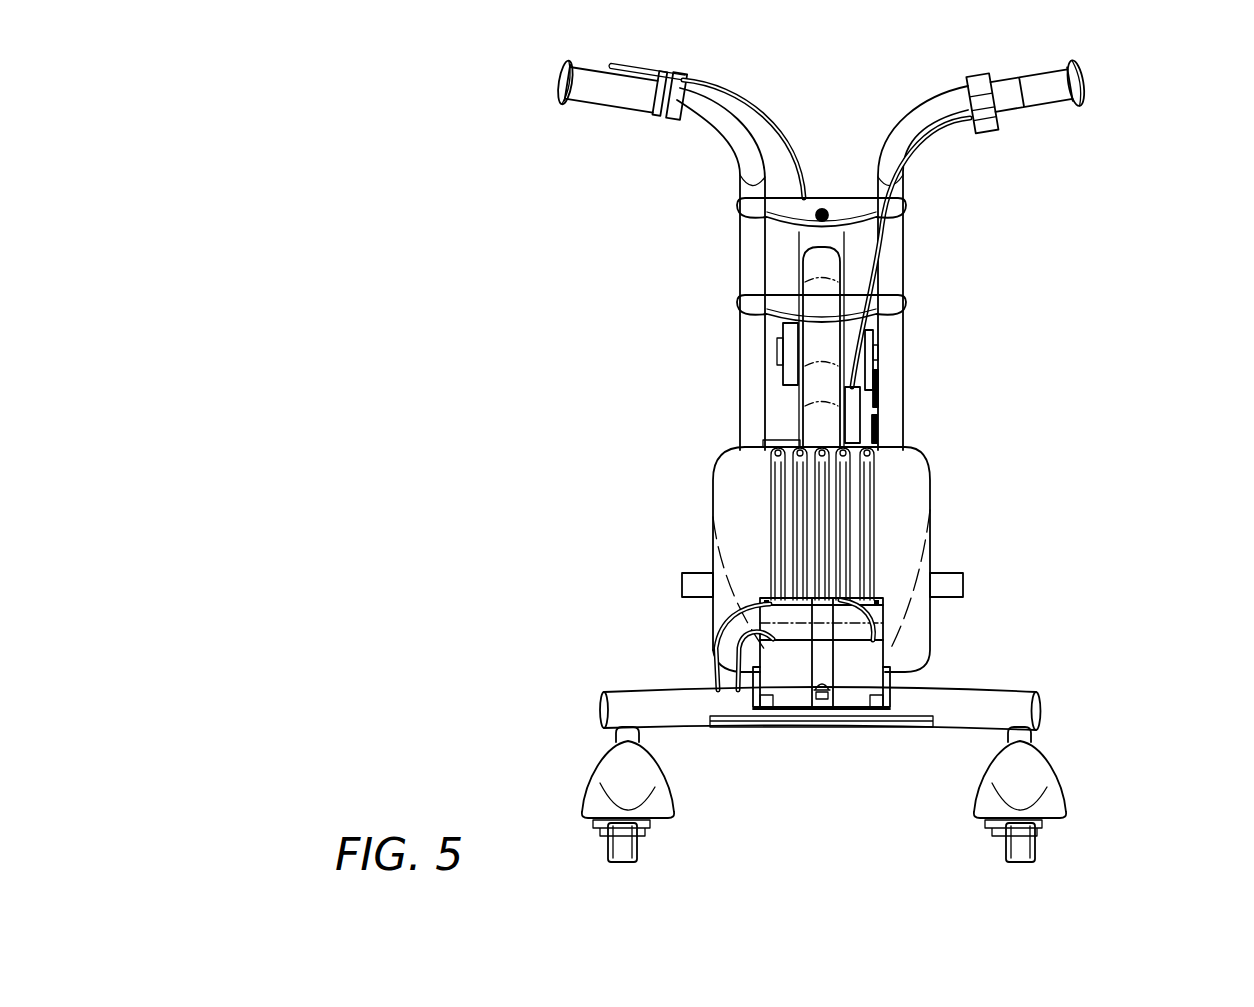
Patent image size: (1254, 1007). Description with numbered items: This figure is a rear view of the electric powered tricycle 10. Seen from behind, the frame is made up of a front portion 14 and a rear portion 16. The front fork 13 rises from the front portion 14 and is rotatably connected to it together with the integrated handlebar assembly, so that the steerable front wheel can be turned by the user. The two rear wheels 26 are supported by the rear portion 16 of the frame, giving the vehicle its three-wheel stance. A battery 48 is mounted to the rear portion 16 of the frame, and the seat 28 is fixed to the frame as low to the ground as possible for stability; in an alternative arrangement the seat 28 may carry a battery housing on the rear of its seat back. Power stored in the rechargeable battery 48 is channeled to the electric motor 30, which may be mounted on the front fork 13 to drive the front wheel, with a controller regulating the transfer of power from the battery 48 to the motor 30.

The tricycle 10 is at (1152, 193).
The front fork 13 is at (735, 322).
The front portion 14 is at (830, 386).
The rear portion 16 is at (1000, 693).
The rear wheels 26 is at (623, 858).
The seat 28 is at (913, 488).
The electric motor 30 is at (866, 350).
The battery 48 is at (858, 688).